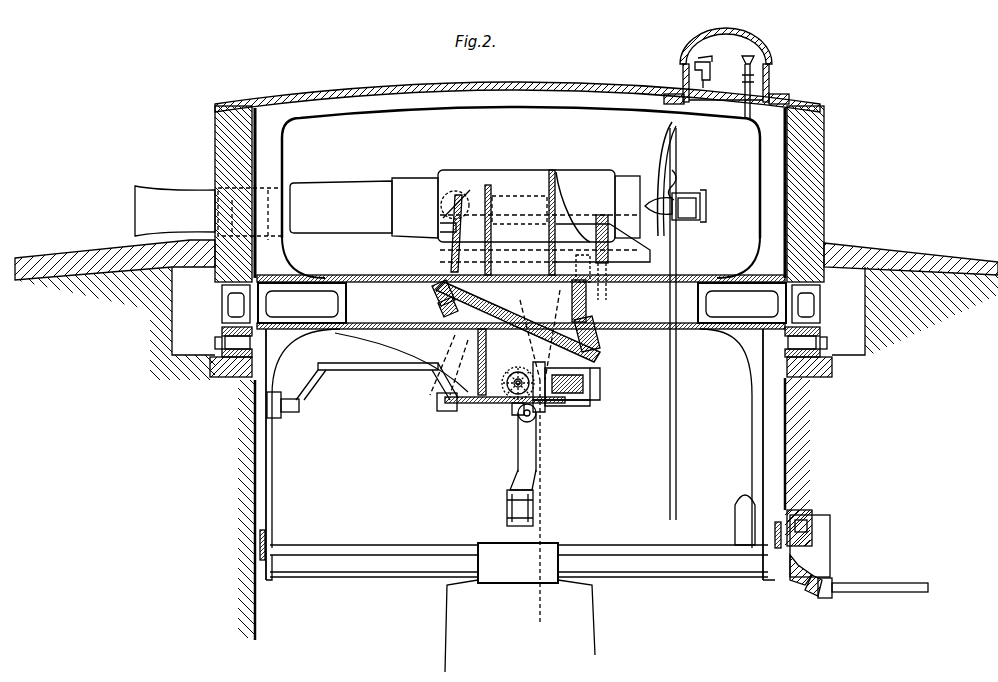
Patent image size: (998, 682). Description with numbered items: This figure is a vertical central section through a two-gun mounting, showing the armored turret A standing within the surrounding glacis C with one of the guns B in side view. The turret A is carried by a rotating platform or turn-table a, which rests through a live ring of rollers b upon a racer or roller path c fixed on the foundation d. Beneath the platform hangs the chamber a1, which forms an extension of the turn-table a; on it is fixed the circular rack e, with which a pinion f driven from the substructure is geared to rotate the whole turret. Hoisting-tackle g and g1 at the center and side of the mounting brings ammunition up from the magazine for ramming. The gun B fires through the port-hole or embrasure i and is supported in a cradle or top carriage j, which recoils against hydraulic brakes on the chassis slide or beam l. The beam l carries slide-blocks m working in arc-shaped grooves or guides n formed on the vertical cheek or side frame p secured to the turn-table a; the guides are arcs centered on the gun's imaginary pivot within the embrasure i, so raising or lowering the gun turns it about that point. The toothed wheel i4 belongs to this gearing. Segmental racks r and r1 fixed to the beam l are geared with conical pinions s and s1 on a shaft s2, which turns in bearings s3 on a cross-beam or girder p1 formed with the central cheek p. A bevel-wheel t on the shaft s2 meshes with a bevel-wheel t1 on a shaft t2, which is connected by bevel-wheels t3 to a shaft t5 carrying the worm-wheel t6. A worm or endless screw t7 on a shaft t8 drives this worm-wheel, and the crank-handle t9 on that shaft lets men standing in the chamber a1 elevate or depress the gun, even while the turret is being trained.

The turret A is at (514, 194).
The gun B is at (387, 222).
The glacis C is at (506, 431).
The rotating platform or turn-table a is at (521, 294).
The chamber a1 is at (520, 500).
The live ring of rollers b is at (521, 342).
The racer or roller path c is at (215, 343).
The foundation d is at (522, 369).
The circular rack e is at (262, 560).
The pinion f is at (812, 538).
The hoisting-tackle g is at (529, 502).
The hoisting-tackle g1 is at (682, 321).
The port-hole or embrasure i is at (250, 214).
The ratchet wheel i4 is at (512, 370).
The cradle or top carriage j is at (440, 228).
The chassis slide or beam l is at (597, 252).
The slide-block m is at (540, 222).
The segmental or arc-shaped groove or guide n is at (495, 342).
The vertical cheek or side frame p is at (603, 243).
The cross-beam or girder p1 is at (500, 358).
The segmental rack r is at (614, 332).
The segmental rack r1 is at (448, 240).
The conical pinion s is at (572, 356).
The conical pinion s1 is at (434, 293).
The shaft s2 is at (574, 304).
The bearing s3 is at (519, 324).
The bevel-wheel t is at (574, 374).
The bevel-wheel t1 is at (602, 388).
The shaft t2 is at (567, 394).
The bevel-wheel t3 is at (545, 407).
The shaft t5 is at (535, 366).
The worm-wheel t6 is at (509, 380).
The worm or endless screw t7 is at (514, 414).
The shaft t8 is at (501, 417).
The crank-handle t9 is at (362, 376).